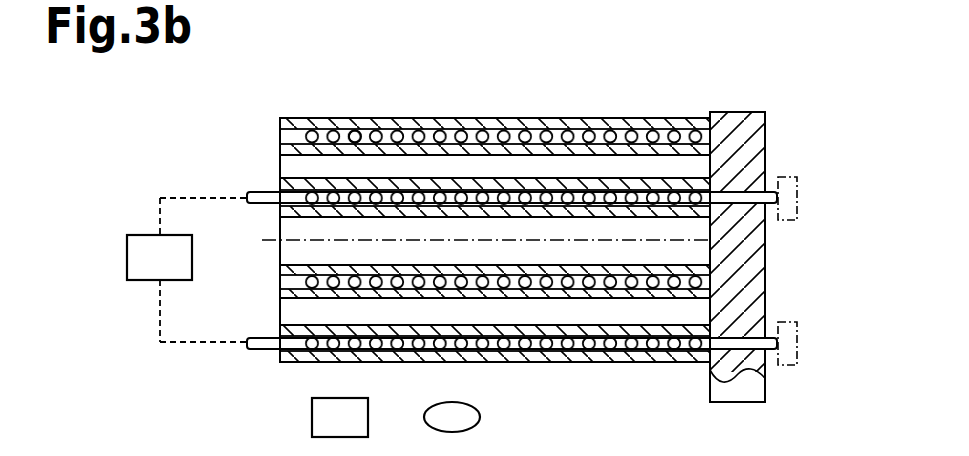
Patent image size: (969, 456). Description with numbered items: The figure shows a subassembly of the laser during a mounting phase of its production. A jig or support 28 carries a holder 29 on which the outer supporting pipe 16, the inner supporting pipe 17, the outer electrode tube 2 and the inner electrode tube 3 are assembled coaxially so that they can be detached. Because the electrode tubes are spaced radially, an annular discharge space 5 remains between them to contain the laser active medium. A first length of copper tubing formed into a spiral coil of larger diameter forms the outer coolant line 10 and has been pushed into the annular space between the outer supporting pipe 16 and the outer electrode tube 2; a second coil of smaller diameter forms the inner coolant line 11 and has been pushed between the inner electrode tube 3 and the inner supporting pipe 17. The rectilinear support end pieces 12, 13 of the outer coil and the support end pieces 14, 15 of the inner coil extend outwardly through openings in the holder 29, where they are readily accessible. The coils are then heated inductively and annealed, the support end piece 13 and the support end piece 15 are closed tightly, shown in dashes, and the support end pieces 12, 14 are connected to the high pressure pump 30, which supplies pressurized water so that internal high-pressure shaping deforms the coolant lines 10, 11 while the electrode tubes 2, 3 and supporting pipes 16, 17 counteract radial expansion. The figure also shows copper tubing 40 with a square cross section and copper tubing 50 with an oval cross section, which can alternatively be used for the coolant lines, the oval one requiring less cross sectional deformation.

The outer electrode tube 2 is at (280, 150).
The inner electrode tube 3 is at (280, 291).
The discharge space 5 is at (512, 165).
The outer coolant line 10 is at (355, 131).
The inner coolant line 11 is at (280, 276).
The support end piece 12 is at (258, 352).
The support end piece 13 is at (770, 355).
The support end piece 14 is at (248, 192).
The support end piece 15 is at (775, 178).
The outer supporting pipe 16 is at (280, 118).
The inner supporting pipe 17 is at (280, 211).
The jig 28 is at (777, 102).
The holder 29 is at (725, 112).
The high pressure pump 30 is at (175, 271).
The copper tubing 40 is at (315, 420).
The copper tubing 50 is at (468, 417).